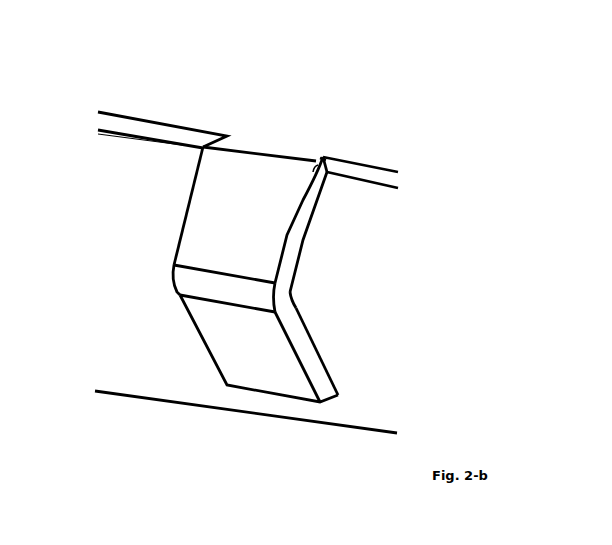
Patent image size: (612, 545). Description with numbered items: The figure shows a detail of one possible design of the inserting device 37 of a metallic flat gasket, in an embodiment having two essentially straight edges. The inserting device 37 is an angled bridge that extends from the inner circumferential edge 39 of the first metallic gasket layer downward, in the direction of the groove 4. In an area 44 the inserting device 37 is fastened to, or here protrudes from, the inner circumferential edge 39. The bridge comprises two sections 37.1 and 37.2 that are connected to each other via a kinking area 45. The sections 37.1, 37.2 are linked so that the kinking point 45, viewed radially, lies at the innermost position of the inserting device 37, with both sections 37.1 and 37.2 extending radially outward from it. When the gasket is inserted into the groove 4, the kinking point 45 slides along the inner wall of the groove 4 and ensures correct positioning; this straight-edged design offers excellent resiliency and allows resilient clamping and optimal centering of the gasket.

The groove 4 is at (122, 362).
The inserting device 37 is at (221, 256).
The first section of the bridge 37.1 is at (205, 193).
The second section of the bridge 37.2 is at (263, 368).
The inner circumferential edge 39 is at (368, 172).
The fastening area 44 is at (323, 155).
The kinking area 45 is at (283, 295).